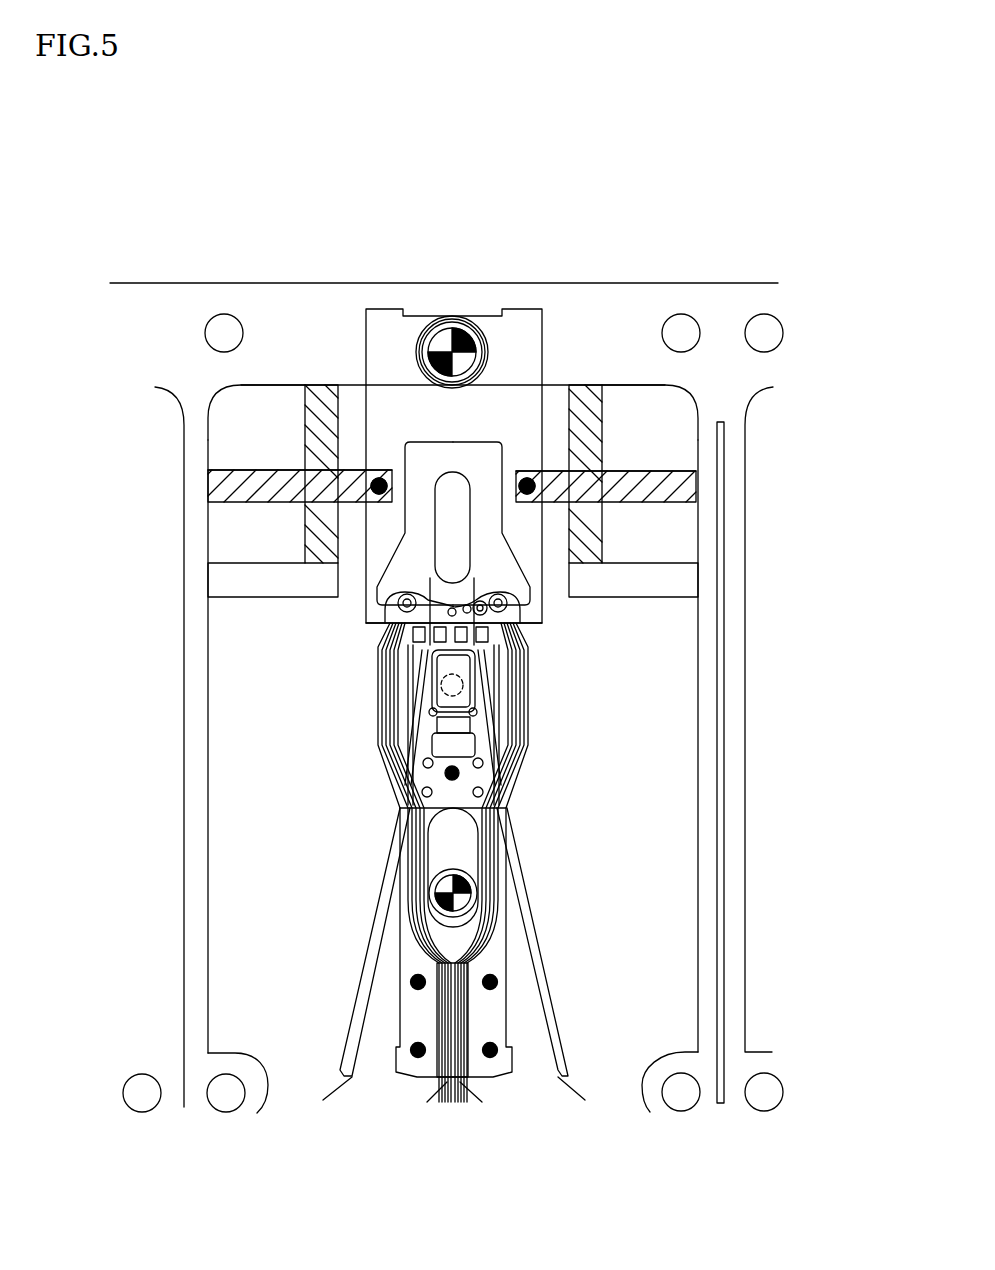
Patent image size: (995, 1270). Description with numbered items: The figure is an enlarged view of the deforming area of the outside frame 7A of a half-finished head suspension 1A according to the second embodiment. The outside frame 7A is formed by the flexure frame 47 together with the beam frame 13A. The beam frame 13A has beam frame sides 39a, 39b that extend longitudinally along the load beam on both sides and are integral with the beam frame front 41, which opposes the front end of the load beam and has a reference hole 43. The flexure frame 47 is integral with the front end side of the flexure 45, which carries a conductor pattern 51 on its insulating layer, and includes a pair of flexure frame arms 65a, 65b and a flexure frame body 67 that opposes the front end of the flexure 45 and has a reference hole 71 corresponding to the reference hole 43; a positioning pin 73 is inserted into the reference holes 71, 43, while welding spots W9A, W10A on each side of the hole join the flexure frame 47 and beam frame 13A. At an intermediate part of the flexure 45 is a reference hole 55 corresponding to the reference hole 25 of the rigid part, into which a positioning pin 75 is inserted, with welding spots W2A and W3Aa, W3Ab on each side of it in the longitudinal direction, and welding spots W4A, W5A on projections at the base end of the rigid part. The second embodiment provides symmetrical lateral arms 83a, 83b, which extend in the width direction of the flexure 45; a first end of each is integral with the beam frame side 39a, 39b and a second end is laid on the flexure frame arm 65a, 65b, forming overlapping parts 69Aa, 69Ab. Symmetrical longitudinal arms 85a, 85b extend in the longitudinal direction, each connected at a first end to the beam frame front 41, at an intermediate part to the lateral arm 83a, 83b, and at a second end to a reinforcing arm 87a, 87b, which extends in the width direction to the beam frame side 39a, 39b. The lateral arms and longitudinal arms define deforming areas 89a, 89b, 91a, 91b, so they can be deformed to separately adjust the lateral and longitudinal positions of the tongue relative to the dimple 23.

The half-finished head suspension 1A is at (711, 205).
The outside frame 7A is at (555, 300).
The beam frame 13A is at (722, 767).
The dimple 23 is at (467, 688).
The reference hole 25 is at (477, 880).
The beam frame side 39a is at (188, 673).
The beam frame side 39b is at (708, 683).
The beam frame front 41 is at (265, 298).
The reference hole 43 is at (452, 335).
The flexure 45 is at (528, 789).
The flexure frame 47 is at (362, 628).
The conductor pattern 51 is at (528, 748).
The reference hole 55 is at (440, 828).
The flexure frame arm 65a is at (368, 565).
The flexure frame arm 65b is at (535, 557).
The flexure frame body 67 is at (517, 310).
The overlapping part 69Aa is at (379, 478).
The overlapping part 69Ab is at (527, 478).
The reference hole 71 is at (437, 340).
The positioning pin 73 is at (418, 372).
The positioning pin 75 is at (440, 886).
The lateral arm 83a is at (218, 478).
The lateral arm 83b is at (692, 488).
The longitudinal arm 85a is at (322, 385).
The longitudinal arm 85b is at (590, 385).
The reinforcing arm 87a is at (225, 575).
The reinforcing arm 87b is at (682, 578).
The deforming area 89a is at (243, 470).
The deforming area 89b is at (655, 477).
The deforming area 91a is at (313, 410).
The deforming area 91b is at (590, 410).
The welding spot W2A is at (452, 773).
The welding spot W3Aa is at (416, 978).
The welding spot W3Ab is at (491, 975).
The welding spot W4A is at (416, 1044).
The welding spot W5A is at (491, 1044).
The welding spot W9A is at (378, 494).
The welding spot W10A is at (527, 494).